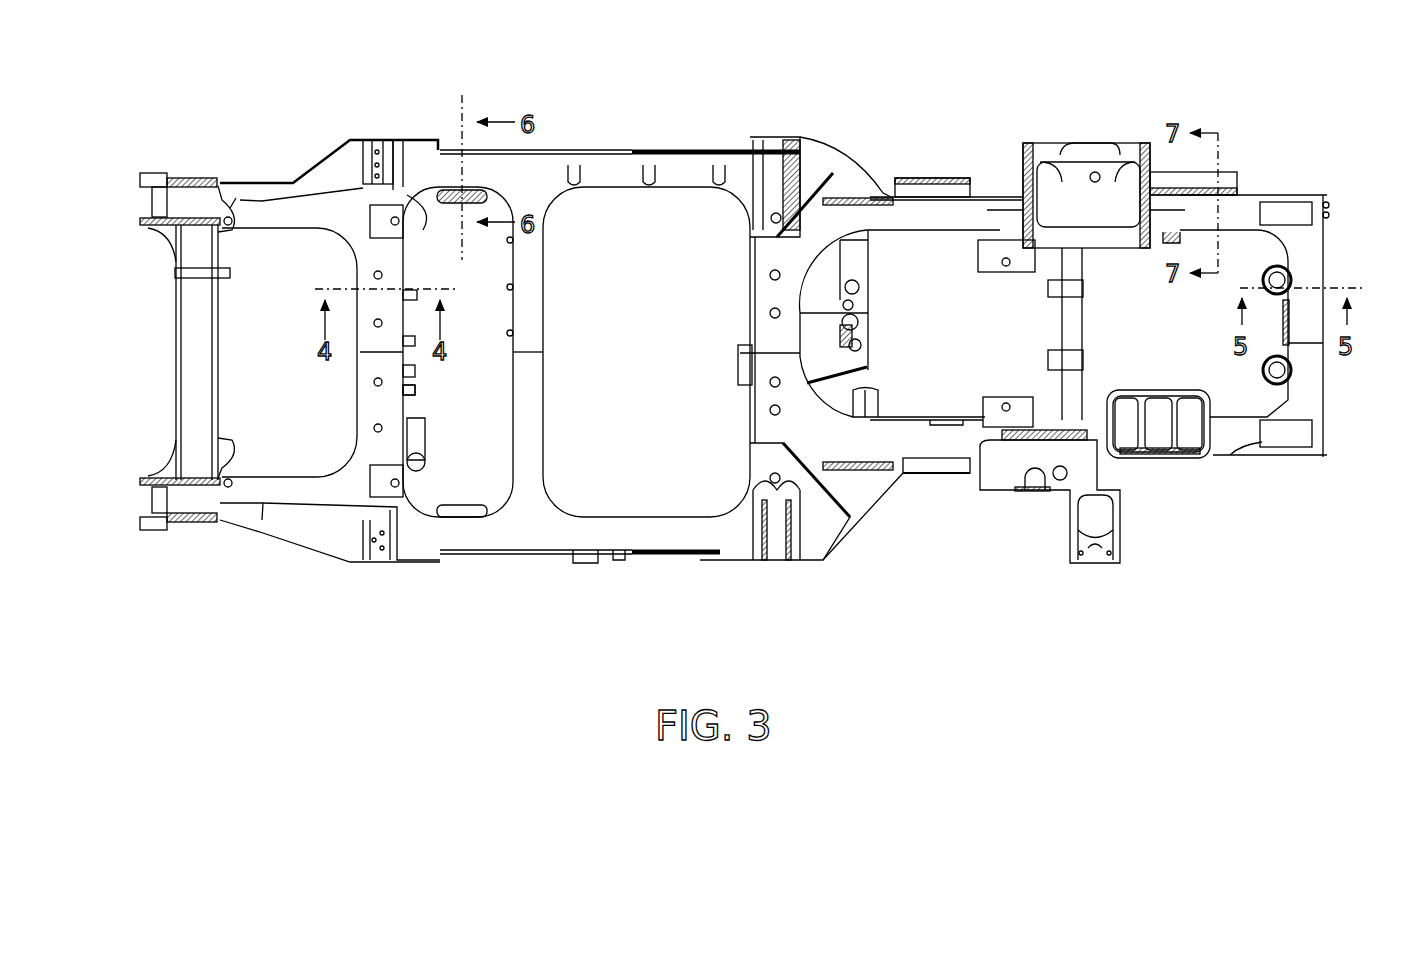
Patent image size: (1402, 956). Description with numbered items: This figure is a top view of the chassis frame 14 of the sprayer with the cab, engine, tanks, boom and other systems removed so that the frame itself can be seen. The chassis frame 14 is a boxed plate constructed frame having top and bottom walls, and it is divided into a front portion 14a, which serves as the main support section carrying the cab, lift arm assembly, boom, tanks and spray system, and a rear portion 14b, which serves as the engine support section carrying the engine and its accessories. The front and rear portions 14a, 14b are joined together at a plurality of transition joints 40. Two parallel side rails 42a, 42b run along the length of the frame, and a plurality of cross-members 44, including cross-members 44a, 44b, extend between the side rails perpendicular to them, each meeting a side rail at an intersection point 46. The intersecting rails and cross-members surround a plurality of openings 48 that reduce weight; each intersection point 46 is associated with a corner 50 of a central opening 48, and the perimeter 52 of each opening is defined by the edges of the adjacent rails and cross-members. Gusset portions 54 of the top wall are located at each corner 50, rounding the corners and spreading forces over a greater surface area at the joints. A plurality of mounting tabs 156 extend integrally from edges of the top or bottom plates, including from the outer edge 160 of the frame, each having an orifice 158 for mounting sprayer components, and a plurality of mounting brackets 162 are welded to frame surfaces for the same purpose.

The chassis frame 14 is at (993, 42).
The front portion 14a is at (143, 350).
The rear portion 14b is at (1265, 487).
The transition joint 40 is at (850, 563).
The side rail 42a is at (453, 540).
The side rail 42b is at (913, 440).
The cross-member 44 is at (770, 330).
The cross-member 44a is at (368, 395).
The cross-member 44b is at (1303, 255).
The intersection point 46 is at (542, 535).
The opening 48 is at (672, 485).
The corner 50 is at (558, 505).
The perimeter 52 is at (505, 265).
The gusset portion 54 is at (738, 523).
The mounting tab 156 is at (423, 205).
The orifice 158 is at (412, 389).
The outer edge 160 is at (652, 142).
The mounting bracket 162 is at (935, 178).